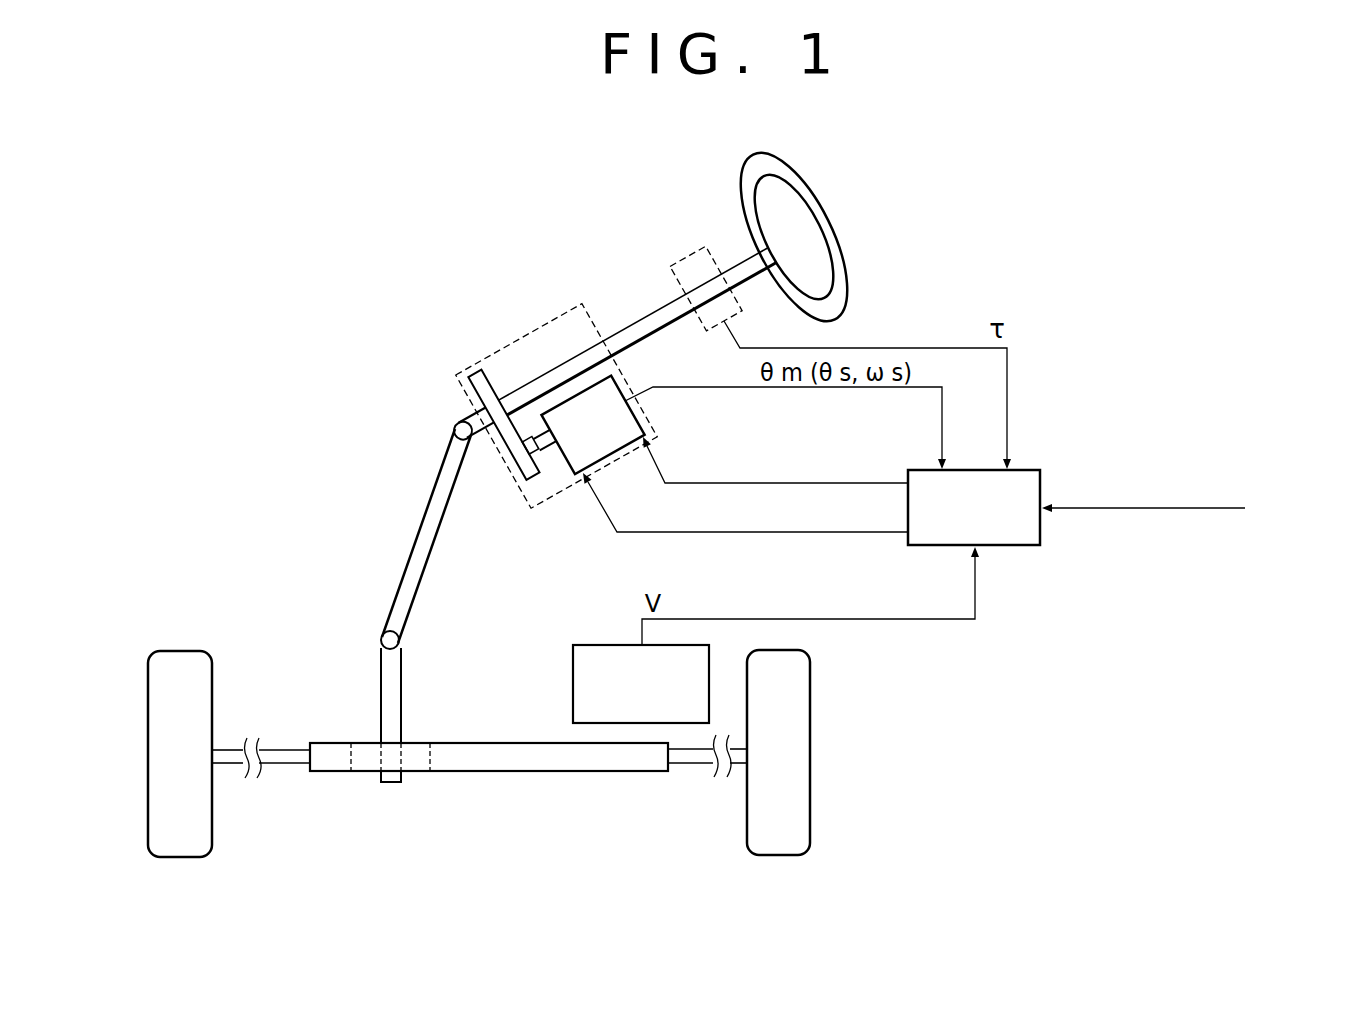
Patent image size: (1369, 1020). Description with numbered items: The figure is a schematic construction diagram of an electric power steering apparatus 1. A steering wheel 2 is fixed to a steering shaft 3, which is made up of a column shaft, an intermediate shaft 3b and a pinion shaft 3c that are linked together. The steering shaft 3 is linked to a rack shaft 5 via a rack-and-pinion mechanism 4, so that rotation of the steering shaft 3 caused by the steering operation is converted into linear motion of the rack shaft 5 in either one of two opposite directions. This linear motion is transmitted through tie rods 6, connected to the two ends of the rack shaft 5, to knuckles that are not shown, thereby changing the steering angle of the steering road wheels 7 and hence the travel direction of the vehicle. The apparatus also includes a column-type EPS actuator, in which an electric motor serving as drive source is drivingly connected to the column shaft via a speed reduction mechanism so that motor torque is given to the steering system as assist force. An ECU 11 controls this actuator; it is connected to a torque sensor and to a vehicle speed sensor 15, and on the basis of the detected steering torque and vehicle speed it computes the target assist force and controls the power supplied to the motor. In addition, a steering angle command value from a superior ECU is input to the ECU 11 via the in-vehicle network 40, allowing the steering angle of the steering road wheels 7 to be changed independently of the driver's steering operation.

The electric power steering apparatus 1 is at (992, 211).
The steering wheel 2 is at (824, 229).
The steering shaft 3 is at (392, 394).
The intermediate shaft 3b is at (416, 528).
The pinion shaft 3c is at (380, 650).
The rack-and-pinion mechanism 4 is at (415, 750).
The rack shaft 5 is at (490, 742).
The tie rods 6 is at (282, 764).
The steering road wheels 7 is at (180, 650).
The ECU 11 is at (1024, 470).
The vehicle speed sensor 15 is at (592, 644).
The in-vehicle network 40 is at (1061, 505).